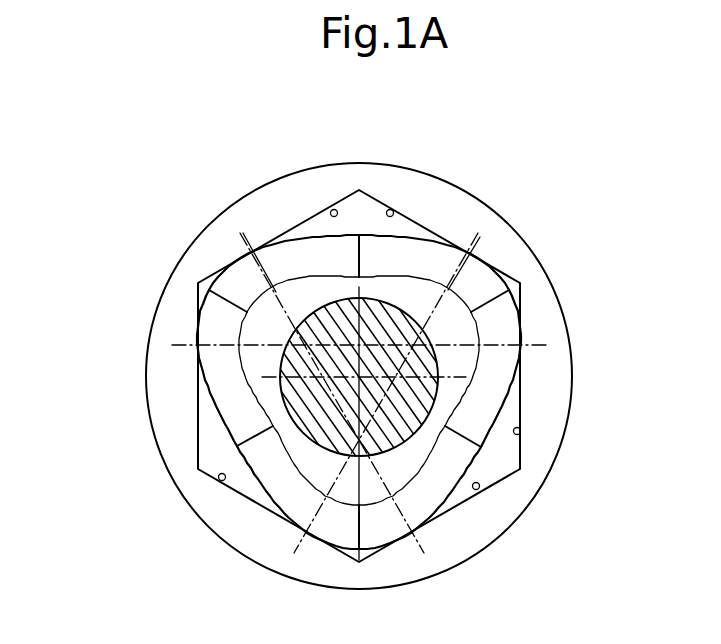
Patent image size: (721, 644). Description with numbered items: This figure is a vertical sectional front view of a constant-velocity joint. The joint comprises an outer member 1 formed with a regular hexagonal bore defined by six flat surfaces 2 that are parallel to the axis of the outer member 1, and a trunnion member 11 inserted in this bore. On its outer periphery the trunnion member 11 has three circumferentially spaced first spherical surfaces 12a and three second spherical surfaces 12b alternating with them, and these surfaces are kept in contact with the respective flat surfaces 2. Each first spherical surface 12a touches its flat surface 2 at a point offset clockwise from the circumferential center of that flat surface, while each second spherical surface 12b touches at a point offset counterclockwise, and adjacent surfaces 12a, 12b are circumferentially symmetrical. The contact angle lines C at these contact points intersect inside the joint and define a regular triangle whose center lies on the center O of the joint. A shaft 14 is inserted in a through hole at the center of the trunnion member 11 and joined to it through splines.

The outer member 1 is at (156, 286).
The flat surfaces 2 is at (333, 211).
The trunnion member 11 is at (206, 424).
The first spherical surfaces 12a is at (480, 283).
The second spherical surfaces 12b is at (287, 257).
The shaft 14 is at (388, 360).
The contact angle lines C is at (243, 233).
The center of the joint O is at (364, 394).